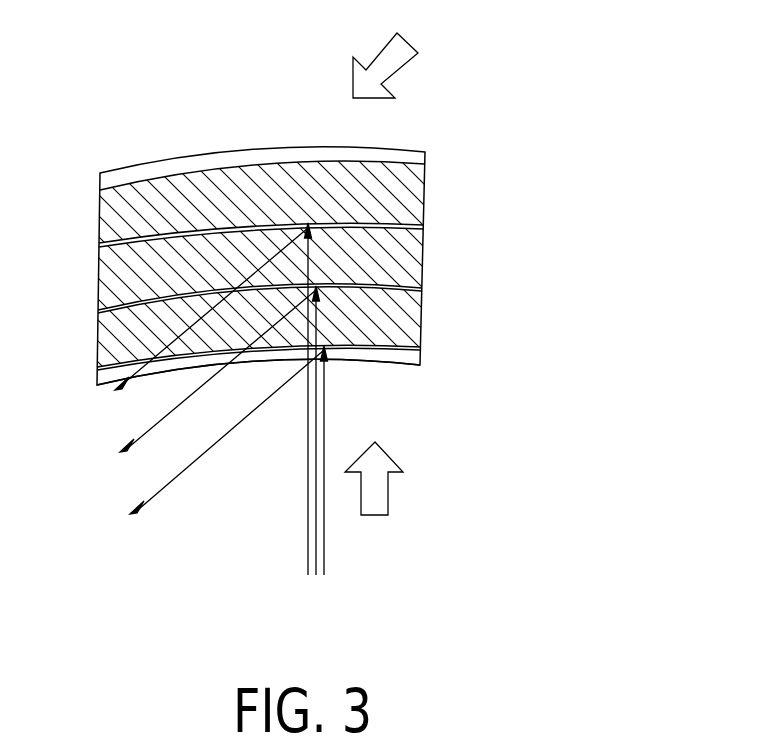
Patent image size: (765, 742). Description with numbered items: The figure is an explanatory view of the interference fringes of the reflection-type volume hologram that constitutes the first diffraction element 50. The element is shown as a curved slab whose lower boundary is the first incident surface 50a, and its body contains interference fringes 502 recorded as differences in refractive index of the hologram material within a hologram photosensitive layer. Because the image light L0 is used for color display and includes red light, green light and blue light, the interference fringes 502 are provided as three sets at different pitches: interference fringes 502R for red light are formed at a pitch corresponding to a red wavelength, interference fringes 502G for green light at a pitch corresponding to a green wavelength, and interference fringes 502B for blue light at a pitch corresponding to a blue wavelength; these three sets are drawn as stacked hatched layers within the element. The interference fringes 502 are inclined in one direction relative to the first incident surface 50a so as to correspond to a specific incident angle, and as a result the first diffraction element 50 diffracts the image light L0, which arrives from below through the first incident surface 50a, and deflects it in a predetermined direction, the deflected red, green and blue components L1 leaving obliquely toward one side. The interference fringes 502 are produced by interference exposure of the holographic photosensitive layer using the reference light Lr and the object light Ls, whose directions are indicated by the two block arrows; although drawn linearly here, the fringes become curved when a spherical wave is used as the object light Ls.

The first diffraction element 50 is at (320, 242).
The first incident surface 50a is at (407, 367).
The interference fringes 502 is at (320, 265).
The interference fringes for red light 502R is at (417, 198).
The interference fringes for green light 502G is at (416, 250).
The interference fringes for blue light 502B is at (528, 173).
The image light L0 is at (310, 433).
The reflected light (LR, LG, LB) L1 is at (178, 385).
The reference light Lr is at (398, 55).
The object light Ls is at (387, 484).